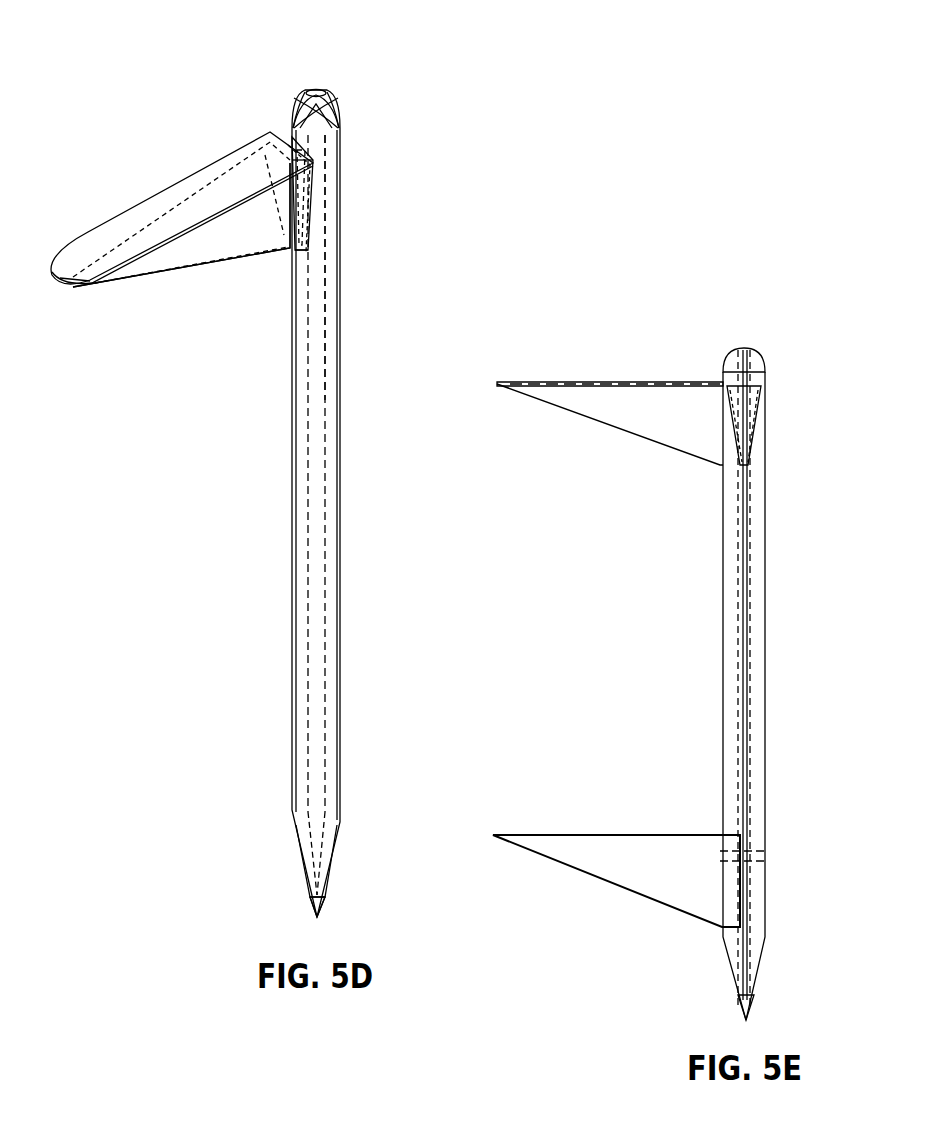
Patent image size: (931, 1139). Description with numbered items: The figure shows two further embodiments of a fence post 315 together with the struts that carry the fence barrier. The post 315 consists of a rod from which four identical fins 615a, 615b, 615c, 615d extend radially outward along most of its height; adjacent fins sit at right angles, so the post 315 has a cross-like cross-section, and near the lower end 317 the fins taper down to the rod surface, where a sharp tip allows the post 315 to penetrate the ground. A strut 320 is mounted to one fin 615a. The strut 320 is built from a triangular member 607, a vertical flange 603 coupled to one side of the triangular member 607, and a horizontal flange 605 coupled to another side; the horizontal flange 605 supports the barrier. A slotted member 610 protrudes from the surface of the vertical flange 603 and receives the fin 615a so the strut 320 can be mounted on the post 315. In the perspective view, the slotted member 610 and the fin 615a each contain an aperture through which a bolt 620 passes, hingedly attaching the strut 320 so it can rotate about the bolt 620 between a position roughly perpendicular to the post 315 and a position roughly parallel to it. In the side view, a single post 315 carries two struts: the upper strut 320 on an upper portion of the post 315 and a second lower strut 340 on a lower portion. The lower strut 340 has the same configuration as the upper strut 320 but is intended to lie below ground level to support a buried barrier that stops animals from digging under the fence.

In FIG. 5D, the post 315 is at (289, 512).
In FIG. 5E, the post 315 is at (722, 672).
In FIG. 5D, the lower end 317 is at (278, 870).
In FIG. 5D, the strut 320 is at (235, 260).
In FIG. 5E, the strut 320 is at (605, 428).
In FIG. 5E, the second lower strut 340 is at (660, 903).
In FIG. 5D, the vertical flange 603 is at (308, 203).
In FIG. 5D, the horizontal flange 605 is at (137, 226).
In FIG. 5D, the triangular member 607 is at (162, 258).
In FIG. 5E, the triangular member 607 is at (705, 417).
In FIG. 5D, the slotted member 610 is at (306, 256).
In FIG. 5D, the fin 615a is at (308, 135).
In FIG. 5D, the fin 615b is at (302, 91).
In FIG. 5D, the fin 615c is at (330, 91).
In FIG. 5D, the fin 615d is at (328, 193).
In FIG. 5D, the bolt 620 is at (323, 905).
In FIG. 5E, the bolt 620 is at (755, 1005).